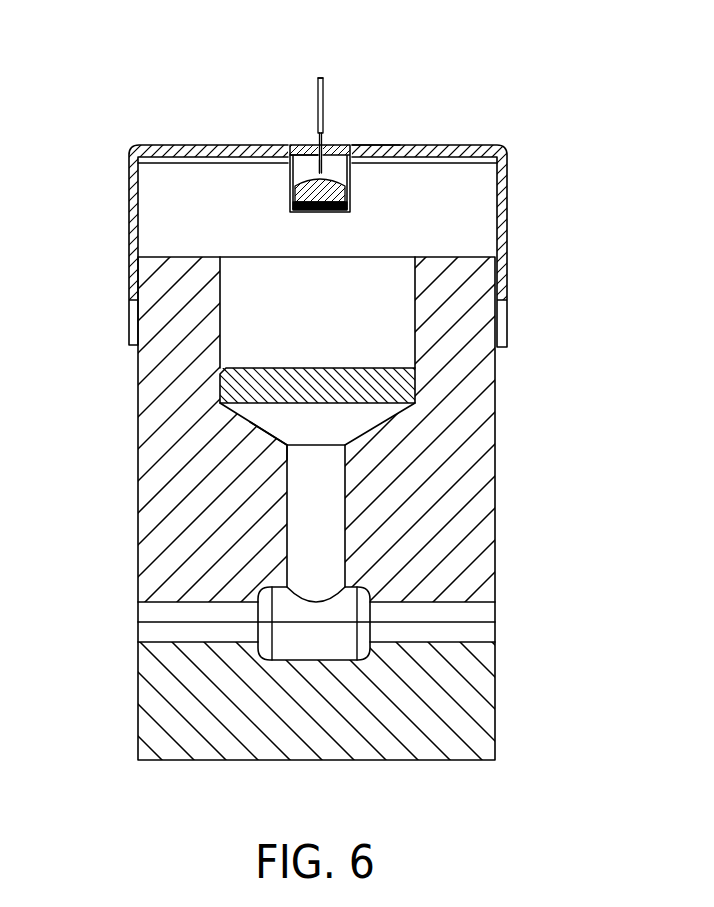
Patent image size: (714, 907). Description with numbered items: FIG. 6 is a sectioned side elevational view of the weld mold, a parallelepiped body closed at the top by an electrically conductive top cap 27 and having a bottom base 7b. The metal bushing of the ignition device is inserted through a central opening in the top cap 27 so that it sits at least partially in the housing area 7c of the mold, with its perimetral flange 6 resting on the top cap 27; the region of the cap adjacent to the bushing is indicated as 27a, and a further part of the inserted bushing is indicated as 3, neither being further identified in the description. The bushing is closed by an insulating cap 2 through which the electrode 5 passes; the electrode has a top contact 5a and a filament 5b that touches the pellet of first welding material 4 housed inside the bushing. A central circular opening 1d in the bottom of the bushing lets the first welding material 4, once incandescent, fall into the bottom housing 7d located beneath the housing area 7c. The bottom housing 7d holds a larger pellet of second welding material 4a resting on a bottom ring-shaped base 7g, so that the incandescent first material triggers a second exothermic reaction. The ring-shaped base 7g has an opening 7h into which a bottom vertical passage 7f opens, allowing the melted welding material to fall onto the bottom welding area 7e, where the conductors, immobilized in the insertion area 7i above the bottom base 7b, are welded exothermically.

The central circular opening 1d is at (292, 212).
The cap 2 is at (305, 148).
The cup bottom 3 is at (350, 213).
The first welding material 4 is at (295, 188).
The second welding material 4a is at (253, 387).
The electrode 5 is at (312, 108).
The top contact 5a is at (324, 87).
The filament 5b is at (290, 149).
The perimetral flange 6 is at (320, 168).
The bottom base 7b is at (180, 672).
The housing area 7c is at (350, 172).
The bottom housing 7d is at (365, 338).
The bottom welding area 7e is at (328, 642).
The bottom vertical passage 7f is at (327, 511).
The bottom ring-shaped base 7g is at (253, 412).
The opening 7h is at (264, 431).
The insertion area 7i is at (480, 604).
The top cap 27 is at (137, 143).
The cap top wall 27a is at (357, 143).